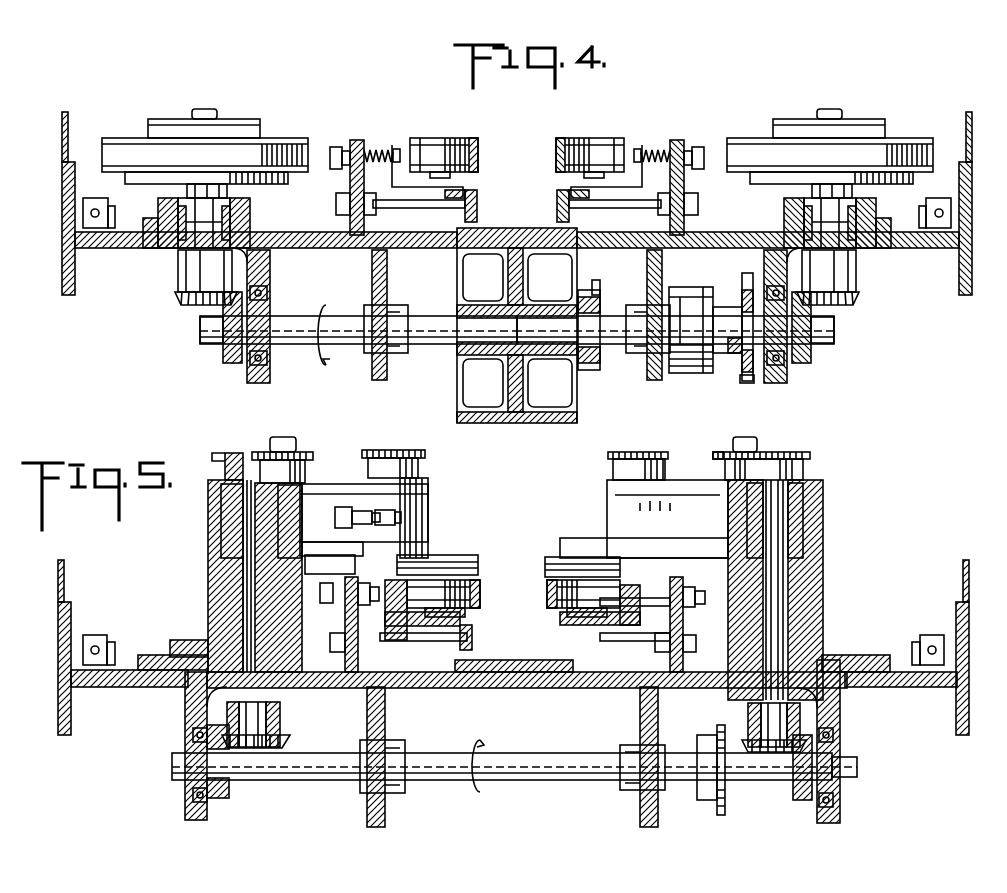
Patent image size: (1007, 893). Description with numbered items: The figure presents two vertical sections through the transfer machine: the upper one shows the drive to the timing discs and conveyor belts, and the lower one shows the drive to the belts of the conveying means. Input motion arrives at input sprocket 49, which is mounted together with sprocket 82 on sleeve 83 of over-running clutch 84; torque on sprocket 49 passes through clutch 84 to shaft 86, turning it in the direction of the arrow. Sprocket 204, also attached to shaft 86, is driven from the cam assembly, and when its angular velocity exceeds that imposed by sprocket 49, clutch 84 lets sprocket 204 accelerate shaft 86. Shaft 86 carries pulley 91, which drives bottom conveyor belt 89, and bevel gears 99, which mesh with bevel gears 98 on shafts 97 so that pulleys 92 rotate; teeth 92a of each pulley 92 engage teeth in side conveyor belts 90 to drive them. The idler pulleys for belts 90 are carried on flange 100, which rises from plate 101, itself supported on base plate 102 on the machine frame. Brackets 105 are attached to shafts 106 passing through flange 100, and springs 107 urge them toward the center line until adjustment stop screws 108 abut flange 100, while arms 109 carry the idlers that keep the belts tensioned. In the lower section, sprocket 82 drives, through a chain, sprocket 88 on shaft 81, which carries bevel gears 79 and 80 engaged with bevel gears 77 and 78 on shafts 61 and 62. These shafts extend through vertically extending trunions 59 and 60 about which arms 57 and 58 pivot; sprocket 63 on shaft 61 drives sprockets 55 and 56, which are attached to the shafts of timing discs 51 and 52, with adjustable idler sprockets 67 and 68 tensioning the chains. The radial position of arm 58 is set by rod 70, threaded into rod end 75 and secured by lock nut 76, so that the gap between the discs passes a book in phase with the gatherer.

In FIG. 4, the input sprocket 49 is at (745, 383).
In FIG. 5, the timing disc 51 is at (558, 557).
In FIG. 5, the timing disc 52 is at (480, 555).
In FIG. 5, the sprocket 55 is at (612, 456).
In FIG. 5, the sprocket 56 is at (400, 450).
In FIG. 5, the arm 57 is at (690, 507).
In FIG. 5, the arm 58 is at (349, 517).
In FIG. 5, the trunion 59 is at (805, 519).
In FIG. 5, the trunion 60 is at (222, 519).
In FIG. 5, the shaft 61 is at (780, 590).
In FIG. 5, the shaft 62 is at (250, 586).
In FIG. 5, the sprocket 63 is at (810, 456).
In FIG. 5, the adjustable idler sprocket 67 is at (713, 454).
In FIG. 5, the adjustable idler sprocket 68 is at (258, 448).
In FIG. 5, the rod 70 is at (338, 505).
In FIG. 5, the rod end 75 is at (402, 519).
In FIG. 5, the lock nut 76 is at (378, 518).
In FIG. 5, the bevel gear 77 is at (745, 725).
In FIG. 5, the bevel gear 78 is at (285, 742).
In FIG. 5, the bevel gear 79 is at (800, 797).
In FIG. 5, the bevel gear 80 is at (225, 795).
In FIG. 5, the shaft 81 is at (300, 782).
In FIG. 4, the sprocket 82 is at (740, 372).
In FIG. 4, the sleeve 83 is at (727, 330).
In FIG. 4, the over-running clutch 84 is at (690, 355).
In FIG. 4, the shaft 86 is at (340, 345).
In FIG. 5, the sprocket 88 is at (728, 797).
In FIG. 4, the bottom conveyor belt 89 is at (503, 228).
In FIG. 5, the bottom conveyor belt 89 is at (505, 660).
In FIG. 4, the side conveyor belt 90 is at (552, 140).
In FIG. 4, the pulley 91 is at (497, 423).
In FIG. 4, the pulley 92 is at (118, 145).
In FIG. 4, the teeth 92a is at (300, 140).
In FIG. 4, the shaft 97 is at (222, 190).
In FIG. 4, the bevel gear 98 is at (180, 300).
In FIG. 4, the bevel gear 99 is at (228, 352).
In FIG. 4, the flange 100 is at (360, 140).
In FIG. 5, the flange 100 is at (683, 624).
In FIG. 4, the plate 101 is at (303, 232).
In FIG. 5, the plate 101 is at (168, 655).
In FIG. 4, the base plate 102 is at (95, 245).
In FIG. 5, the base plate 102 is at (105, 688).
In FIG. 4, the bracket 105 is at (470, 187).
In FIG. 5, the bracket 105 is at (565, 615).
In FIG. 4, the shaft 106 is at (395, 150).
In FIG. 5, the shaft 106 is at (640, 598).
In FIG. 4, the spring 107 is at (387, 152).
In FIG. 5, the spring 107 is at (368, 592).
In FIG. 4, the adjustment stop screw 108 is at (338, 147).
In FIG. 5, the adjustment stop screw 108 is at (710, 533).
In FIG. 5, the arm 109 is at (350, 615).
In FIG. 4, the sprocket 204 is at (598, 290).